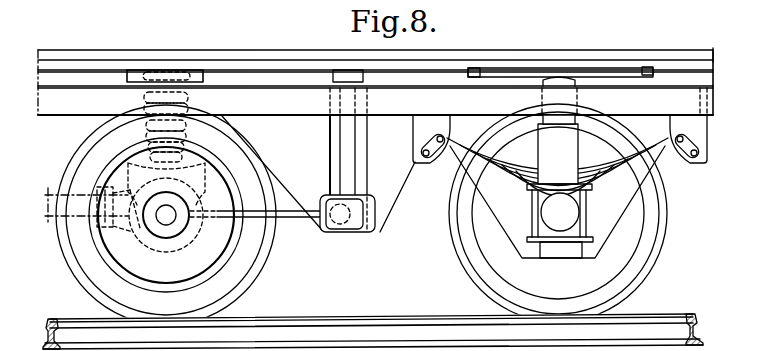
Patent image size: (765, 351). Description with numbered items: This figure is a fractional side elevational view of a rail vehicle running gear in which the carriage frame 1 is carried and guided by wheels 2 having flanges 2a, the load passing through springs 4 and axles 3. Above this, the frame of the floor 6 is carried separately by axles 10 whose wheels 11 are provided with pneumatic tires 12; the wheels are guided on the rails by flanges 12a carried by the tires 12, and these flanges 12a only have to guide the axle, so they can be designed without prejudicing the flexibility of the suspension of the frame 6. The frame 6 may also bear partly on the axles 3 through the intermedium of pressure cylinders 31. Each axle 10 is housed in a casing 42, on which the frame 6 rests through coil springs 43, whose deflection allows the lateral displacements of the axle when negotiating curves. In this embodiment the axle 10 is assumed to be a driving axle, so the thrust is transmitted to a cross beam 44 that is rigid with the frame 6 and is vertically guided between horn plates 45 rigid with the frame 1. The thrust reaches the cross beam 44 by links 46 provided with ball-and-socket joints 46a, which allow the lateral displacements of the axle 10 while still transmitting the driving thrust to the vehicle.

The carriage frame 1 is at (492, 110).
The wheels 2 is at (643, 246).
The flanges 2a is at (473, 281).
The axles 3 is at (540, 217).
The springs 4 is at (509, 177).
The frame of the floor 6 is at (490, 60).
The axles 10 is at (166, 226).
The wheels 11 is at (232, 258).
The pneumatic tires 12 is at (258, 249).
The flanges 12a is at (248, 288).
The pressure cylinders 31 is at (540, 141).
The casing 42 is at (96, 234).
The coil springs 43 is at (144, 97).
The cross beam 44 is at (373, 223).
The horn plates 45 is at (403, 187).
The links 46 is at (293, 214).
The ball-and-socket joints 46a is at (265, 157).